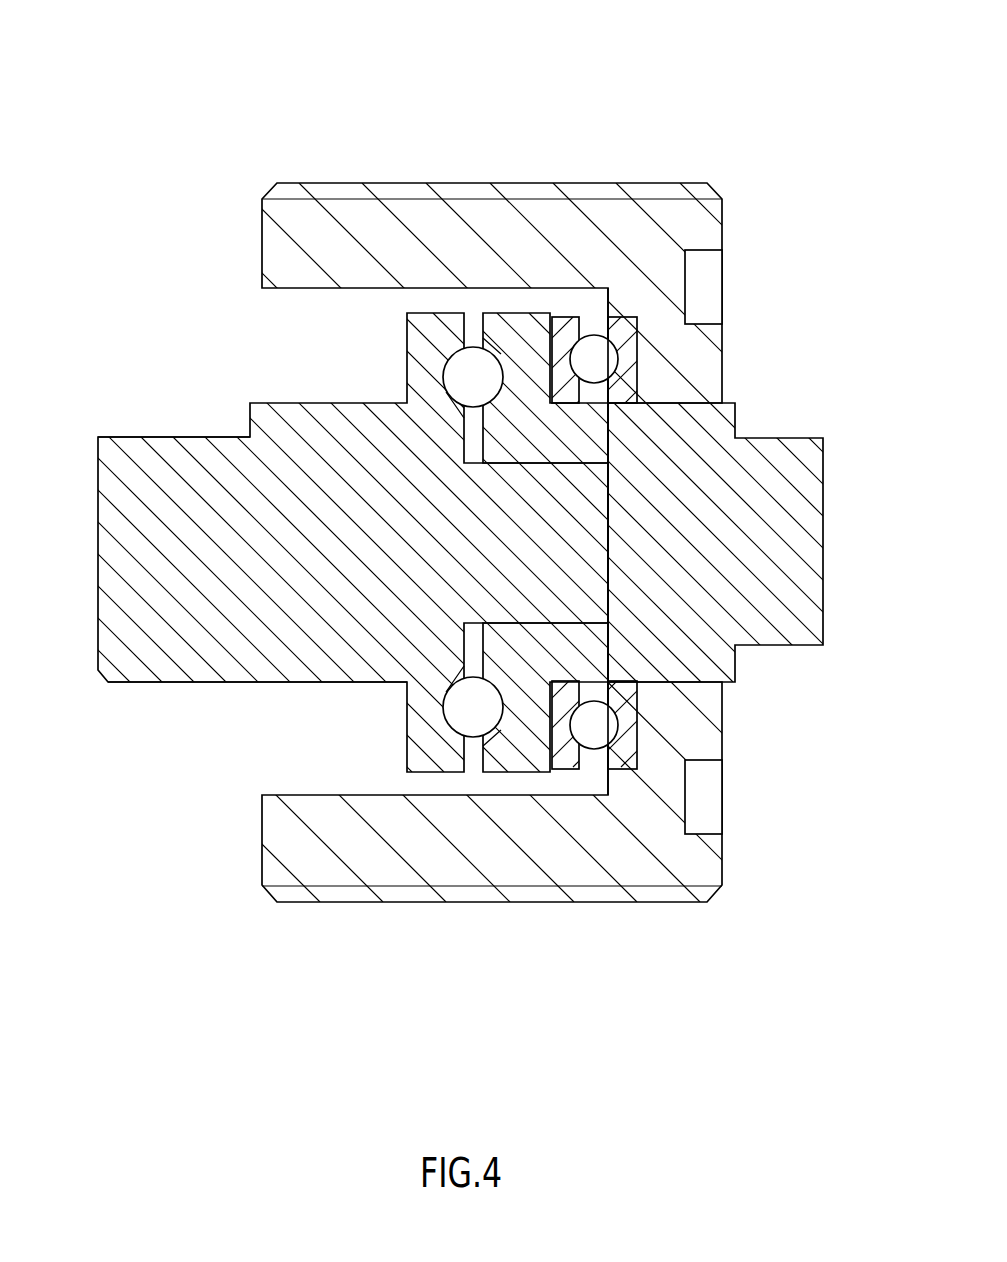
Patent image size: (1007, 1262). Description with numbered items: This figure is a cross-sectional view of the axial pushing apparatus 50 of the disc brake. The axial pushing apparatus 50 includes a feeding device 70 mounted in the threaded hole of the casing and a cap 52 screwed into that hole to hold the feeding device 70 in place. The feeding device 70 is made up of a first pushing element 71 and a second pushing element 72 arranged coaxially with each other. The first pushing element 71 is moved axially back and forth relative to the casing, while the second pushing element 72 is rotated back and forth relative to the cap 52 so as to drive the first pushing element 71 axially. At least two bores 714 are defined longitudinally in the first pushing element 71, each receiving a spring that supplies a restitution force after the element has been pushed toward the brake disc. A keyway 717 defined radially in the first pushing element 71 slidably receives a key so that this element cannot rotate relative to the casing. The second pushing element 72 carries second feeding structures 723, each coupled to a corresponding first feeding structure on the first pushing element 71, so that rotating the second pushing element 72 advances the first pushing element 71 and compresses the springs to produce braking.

The axial pushing apparatus 50 is at (655, 922).
The cap 52 is at (442, 857).
The feeding device 70 is at (247, 368).
The first pushing element 71 is at (182, 488).
The bores 714 is at (338, 683).
The keyway 717 is at (175, 437).
The second pushing element 72 is at (700, 607).
The second feeding structures 723 is at (473, 377).